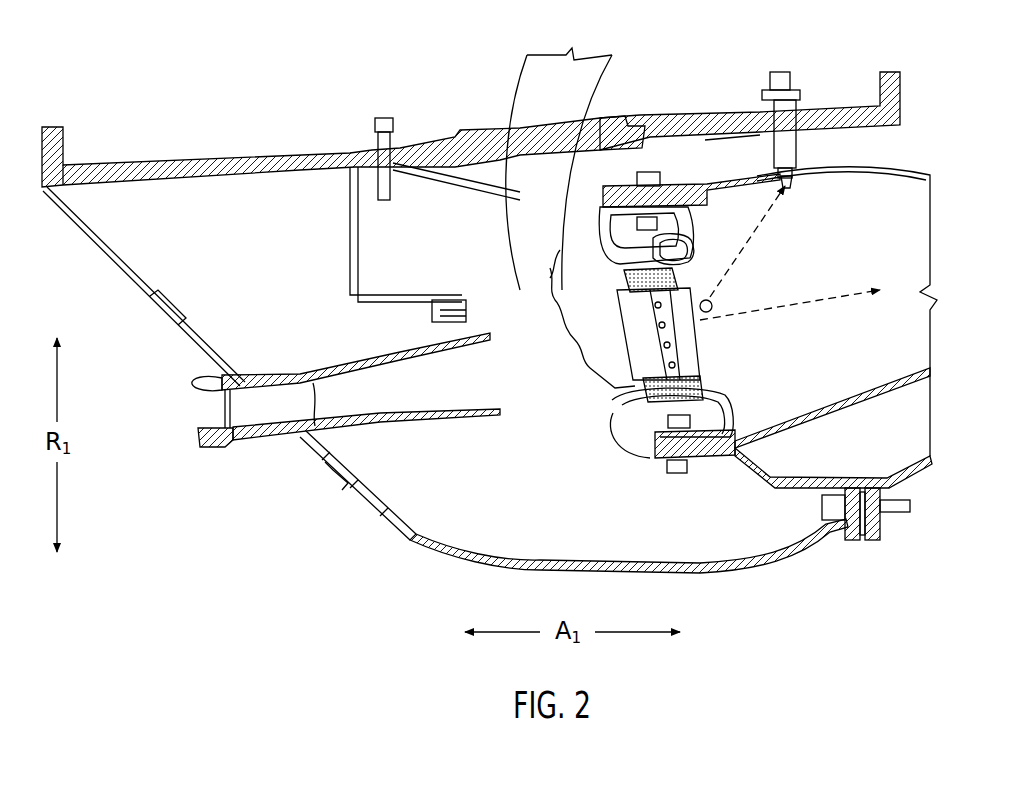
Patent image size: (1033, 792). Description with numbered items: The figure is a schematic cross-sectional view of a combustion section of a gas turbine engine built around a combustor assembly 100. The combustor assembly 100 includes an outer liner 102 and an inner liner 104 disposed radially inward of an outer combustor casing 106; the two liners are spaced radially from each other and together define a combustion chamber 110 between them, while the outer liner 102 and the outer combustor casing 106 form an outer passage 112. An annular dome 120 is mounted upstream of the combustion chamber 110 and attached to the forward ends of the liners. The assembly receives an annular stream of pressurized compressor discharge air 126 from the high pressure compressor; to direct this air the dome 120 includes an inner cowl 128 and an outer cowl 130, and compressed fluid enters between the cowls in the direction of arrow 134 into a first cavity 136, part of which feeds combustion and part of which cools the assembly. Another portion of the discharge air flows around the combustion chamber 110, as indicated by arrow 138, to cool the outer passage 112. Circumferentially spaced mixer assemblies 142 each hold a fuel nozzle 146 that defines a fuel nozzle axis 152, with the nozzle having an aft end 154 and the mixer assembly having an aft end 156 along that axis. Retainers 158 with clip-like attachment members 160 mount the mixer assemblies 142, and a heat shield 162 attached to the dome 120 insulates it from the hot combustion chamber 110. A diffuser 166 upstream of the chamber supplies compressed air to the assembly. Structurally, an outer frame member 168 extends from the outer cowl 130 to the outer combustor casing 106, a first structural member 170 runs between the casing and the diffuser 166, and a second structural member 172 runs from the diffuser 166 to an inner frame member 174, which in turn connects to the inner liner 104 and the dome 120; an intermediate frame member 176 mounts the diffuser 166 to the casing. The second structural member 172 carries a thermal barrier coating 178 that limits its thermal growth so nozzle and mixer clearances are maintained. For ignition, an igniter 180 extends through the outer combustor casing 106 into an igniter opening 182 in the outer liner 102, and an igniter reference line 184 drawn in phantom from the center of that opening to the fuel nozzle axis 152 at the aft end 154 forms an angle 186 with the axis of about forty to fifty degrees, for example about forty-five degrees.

The combustor assembly 100 is at (636, 140).
The outer liner 102 is at (862, 178).
The inner liner 104 is at (880, 395).
The outer combustor casing 106 is at (293, 150).
The combustion chamber 110 is at (879, 268).
The outer passage 112 is at (710, 150).
The dome 120 is at (593, 175).
The compressor discharge air 126 is at (380, 393).
The inner cowl 128 is at (332, 402).
The outer cowl 130 is at (595, 215).
The arrow 134 is at (575, 348).
The first cavity 136 is at (645, 258).
The arrow 138 is at (590, 174).
The mixer assembly 142 is at (562, 265).
The fuel nozzle 146 is at (615, 370).
The fuel nozzle axis 152 is at (788, 316).
The aft end of fuel nozzle 154 is at (712, 358).
The aft end of mixer assembly 156 is at (712, 378).
The retainer 158 is at (657, 445).
The attachment member 160 is at (692, 252).
The heat shield 162 is at (725, 410).
The diffuser 166 is at (283, 377).
The outer frame member 168 is at (465, 185).
The first structural member 170 is at (128, 278).
The second structural member 172 is at (407, 540).
The inner frame member 174 is at (800, 478).
The intermediate frame member 176 is at (360, 242).
The thermal barrier coating 178 is at (560, 560).
The igniter 180 is at (795, 98).
The igniter opening 182 is at (792, 184).
The igniter reference line 184 is at (770, 225).
The angle 186 is at (715, 300).